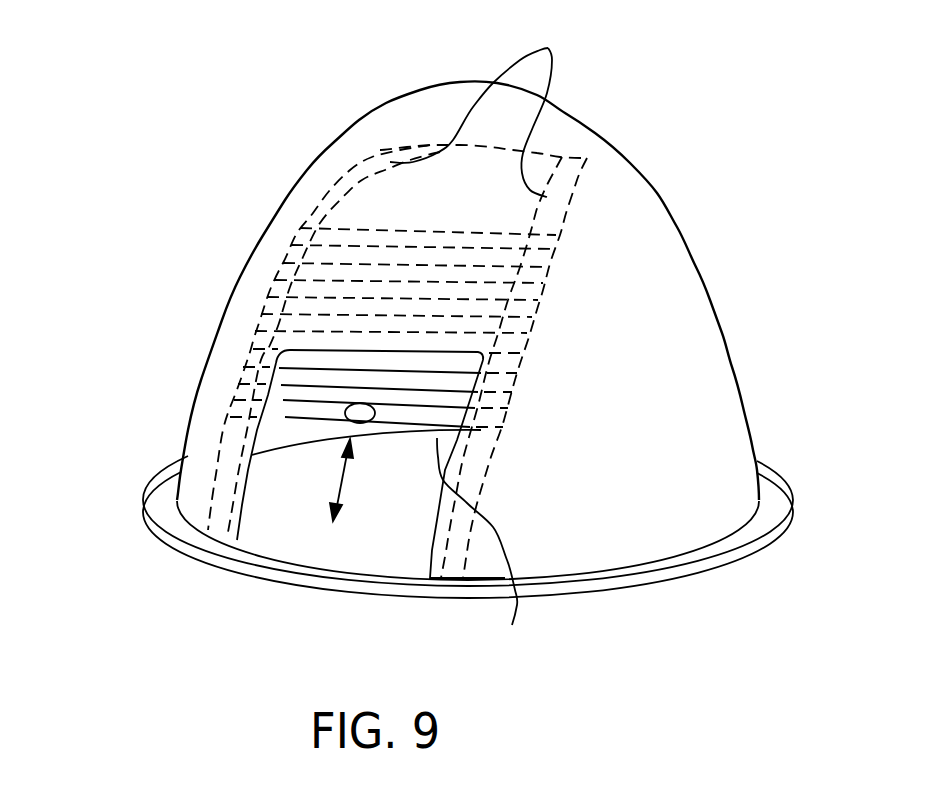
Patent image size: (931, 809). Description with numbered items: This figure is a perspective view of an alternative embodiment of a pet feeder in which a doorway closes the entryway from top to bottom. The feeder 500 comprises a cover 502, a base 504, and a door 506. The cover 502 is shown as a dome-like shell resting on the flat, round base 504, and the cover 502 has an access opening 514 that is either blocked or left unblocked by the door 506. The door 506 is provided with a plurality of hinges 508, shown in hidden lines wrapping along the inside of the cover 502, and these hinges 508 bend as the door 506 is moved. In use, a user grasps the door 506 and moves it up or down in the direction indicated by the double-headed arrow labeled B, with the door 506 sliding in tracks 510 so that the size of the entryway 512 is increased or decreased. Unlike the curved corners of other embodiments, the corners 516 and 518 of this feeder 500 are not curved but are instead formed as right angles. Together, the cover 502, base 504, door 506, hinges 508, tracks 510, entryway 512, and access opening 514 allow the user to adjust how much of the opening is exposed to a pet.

The feeder 500 is at (112, 265).
The cover 502 is at (680, 241).
The base 504 is at (722, 562).
The door 506 is at (293, 418).
The hinges 508 is at (478, 392).
The tracks 510 is at (484, 106).
The entryway 512 is at (360, 540).
The access opening 514 is at (430, 562).
The corner 516 is at (267, 434).
The corner 518 is at (482, 545).